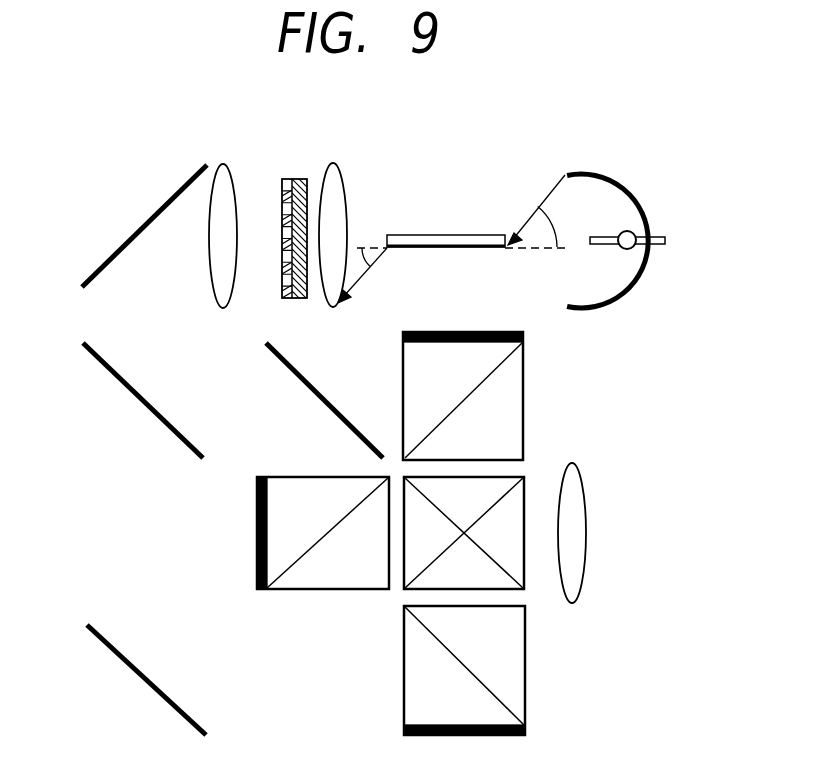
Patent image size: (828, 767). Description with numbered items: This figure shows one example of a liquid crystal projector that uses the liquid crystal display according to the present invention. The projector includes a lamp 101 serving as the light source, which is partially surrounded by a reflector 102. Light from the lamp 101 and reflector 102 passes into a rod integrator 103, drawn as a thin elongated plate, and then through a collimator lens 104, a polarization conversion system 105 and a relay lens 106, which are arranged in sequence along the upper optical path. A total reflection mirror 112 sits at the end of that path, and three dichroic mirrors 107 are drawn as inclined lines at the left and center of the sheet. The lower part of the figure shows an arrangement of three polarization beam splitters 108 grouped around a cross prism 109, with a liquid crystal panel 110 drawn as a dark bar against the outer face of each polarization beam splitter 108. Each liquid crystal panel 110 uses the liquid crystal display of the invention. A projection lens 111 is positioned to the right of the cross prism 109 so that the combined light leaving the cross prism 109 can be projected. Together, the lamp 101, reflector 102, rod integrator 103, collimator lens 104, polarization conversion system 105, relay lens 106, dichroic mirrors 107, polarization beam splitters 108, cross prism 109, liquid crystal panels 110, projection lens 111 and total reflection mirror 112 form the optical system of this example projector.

The lamp 101 is at (633, 259).
The reflector 102 is at (633, 184).
The rod integrator 103 is at (468, 234).
The collimator lens 104 is at (341, 177).
The polarization conversion system 105 is at (303, 184).
The relay lens 106 is at (229, 172).
The dichroic mirror 107 is at (310, 383).
The polarization beam splitter 108 is at (292, 491).
The cross prism 109 is at (513, 472).
The liquid crystal panel 110 is at (462, 331).
The projection lens 111 is at (575, 535).
The total reflection mirror 112 is at (143, 226).